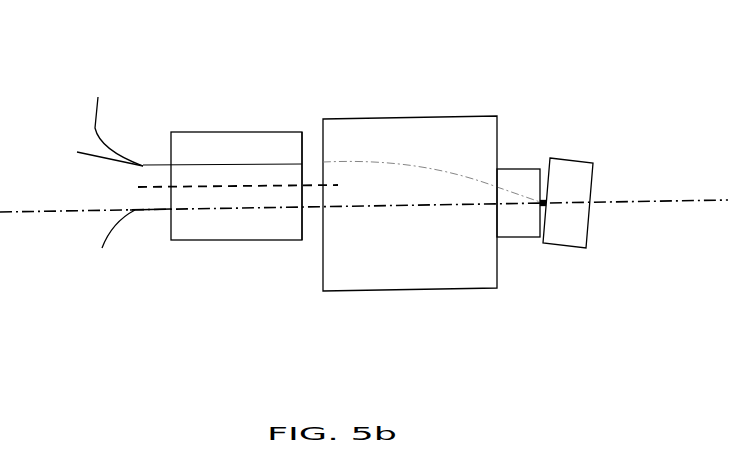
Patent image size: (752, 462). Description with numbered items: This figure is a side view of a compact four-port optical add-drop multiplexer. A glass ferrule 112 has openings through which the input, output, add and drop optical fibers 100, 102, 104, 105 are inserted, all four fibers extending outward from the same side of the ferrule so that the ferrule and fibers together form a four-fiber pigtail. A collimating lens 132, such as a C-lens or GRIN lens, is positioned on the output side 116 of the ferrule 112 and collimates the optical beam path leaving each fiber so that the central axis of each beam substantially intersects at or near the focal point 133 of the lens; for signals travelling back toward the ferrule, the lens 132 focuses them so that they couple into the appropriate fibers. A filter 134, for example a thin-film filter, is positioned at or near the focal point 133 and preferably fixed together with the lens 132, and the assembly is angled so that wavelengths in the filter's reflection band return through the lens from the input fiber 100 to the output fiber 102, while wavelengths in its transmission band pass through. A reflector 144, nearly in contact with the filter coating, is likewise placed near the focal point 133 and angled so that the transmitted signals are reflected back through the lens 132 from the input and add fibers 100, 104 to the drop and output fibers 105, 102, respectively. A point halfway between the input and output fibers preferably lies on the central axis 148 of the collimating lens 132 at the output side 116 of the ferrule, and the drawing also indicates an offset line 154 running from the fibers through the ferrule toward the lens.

The input optical fiber 100 is at (110, 235).
The output optical fiber 102 is at (130, 210).
The add optical fiber 104 is at (85, 153).
The drop optical fiber 105 is at (114, 118).
The glass ferrule 112 is at (222, 132).
The output side 116 is at (301, 136).
The collimating lens 132 is at (405, 117).
The focal point 133 is at (545, 202).
The filter 134 is at (517, 168).
The reflector 144 is at (568, 248).
The central axis 148 is at (634, 202).
The offset axis 154 is at (245, 183).